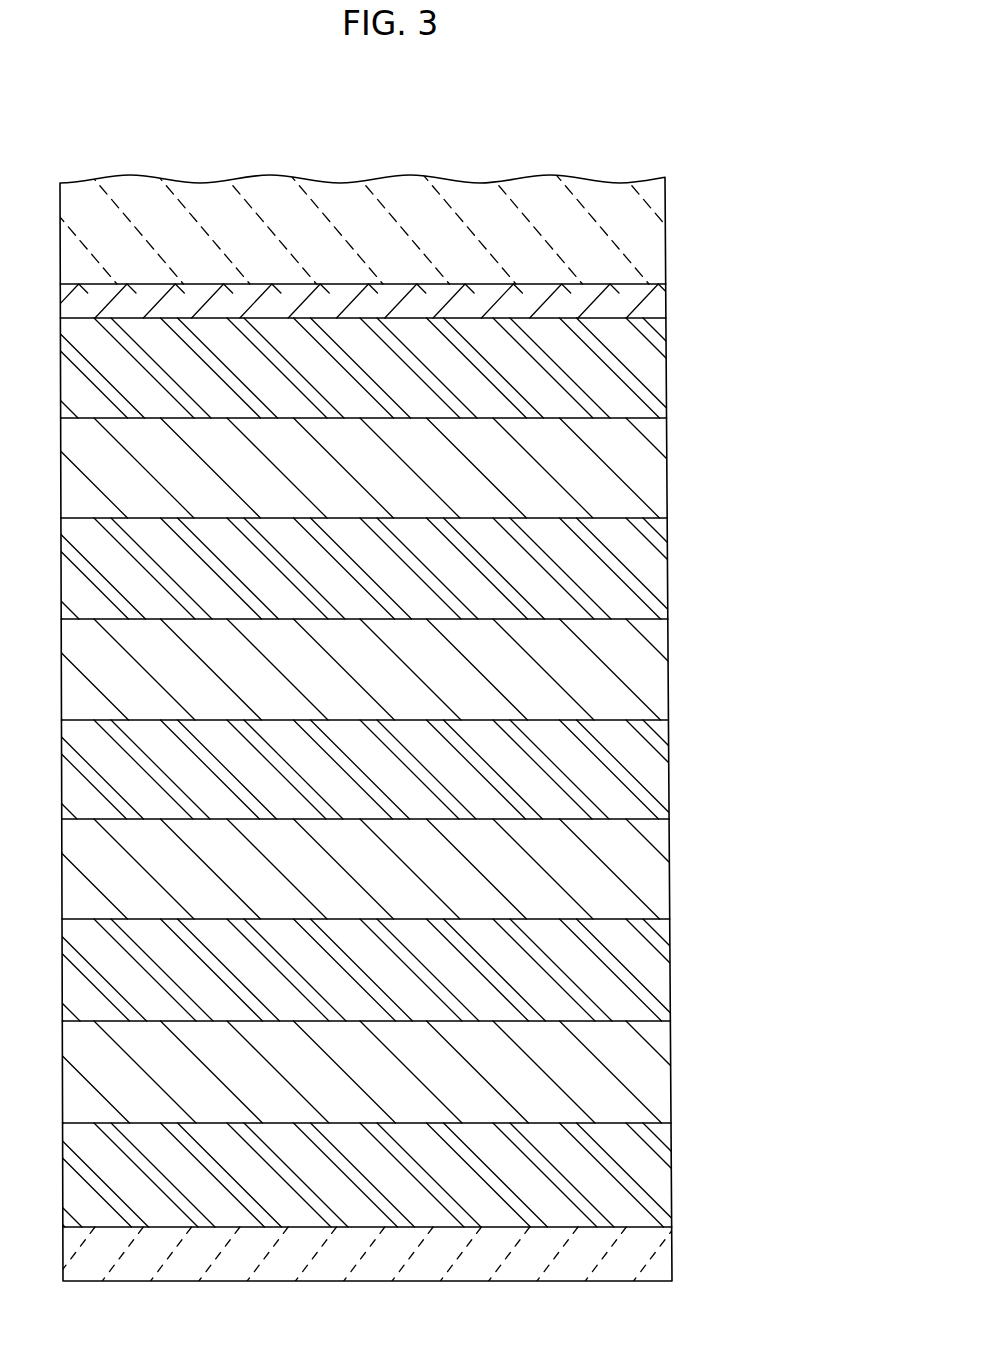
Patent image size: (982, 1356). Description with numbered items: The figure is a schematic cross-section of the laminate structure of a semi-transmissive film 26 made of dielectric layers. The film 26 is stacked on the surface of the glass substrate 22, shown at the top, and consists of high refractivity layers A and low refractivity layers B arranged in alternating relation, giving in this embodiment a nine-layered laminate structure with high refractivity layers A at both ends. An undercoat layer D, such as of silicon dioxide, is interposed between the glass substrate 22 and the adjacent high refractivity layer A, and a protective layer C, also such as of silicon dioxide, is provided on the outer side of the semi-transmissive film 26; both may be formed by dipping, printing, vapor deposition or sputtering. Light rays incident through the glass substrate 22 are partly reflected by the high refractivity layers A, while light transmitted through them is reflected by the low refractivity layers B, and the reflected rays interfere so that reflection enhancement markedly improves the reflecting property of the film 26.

The glass substrate 22 is at (648, 240).
The undercoat layer D is at (648, 308).
The high refractivity layer A is at (648, 374).
The low refractivity layer B is at (648, 474).
The semi-transmissive film 26 is at (429, 772).
The protective layer C is at (655, 1260).